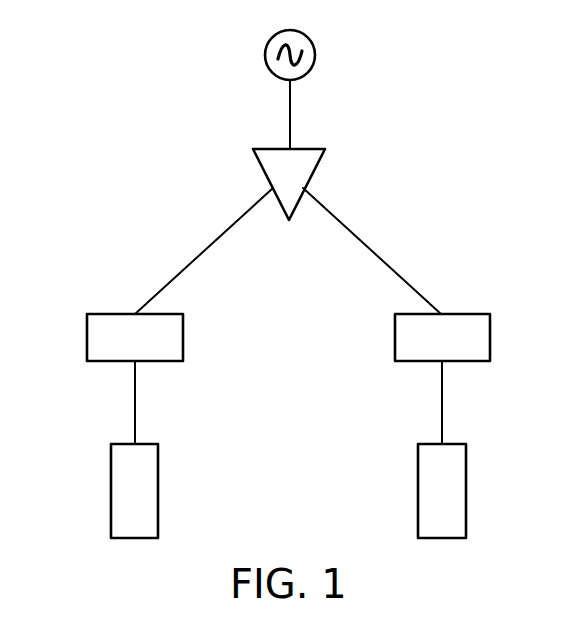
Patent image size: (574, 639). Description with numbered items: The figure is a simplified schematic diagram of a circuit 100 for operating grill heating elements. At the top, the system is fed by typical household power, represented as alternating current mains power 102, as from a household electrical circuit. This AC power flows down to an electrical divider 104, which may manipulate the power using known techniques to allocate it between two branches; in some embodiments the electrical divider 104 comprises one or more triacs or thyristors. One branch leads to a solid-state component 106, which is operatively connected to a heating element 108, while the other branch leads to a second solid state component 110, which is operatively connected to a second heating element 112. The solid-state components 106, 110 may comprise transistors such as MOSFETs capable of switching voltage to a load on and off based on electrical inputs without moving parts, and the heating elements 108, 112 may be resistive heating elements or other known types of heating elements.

The circuit 100 is at (503, 138).
The AC mains power 102 is at (264, 52).
The electrical divider 104 is at (262, 172).
The solid-state component 106 is at (86, 335).
The heating element 108 is at (110, 490).
The second solid state component 110 is at (491, 335).
The second heating element 112 is at (467, 490).